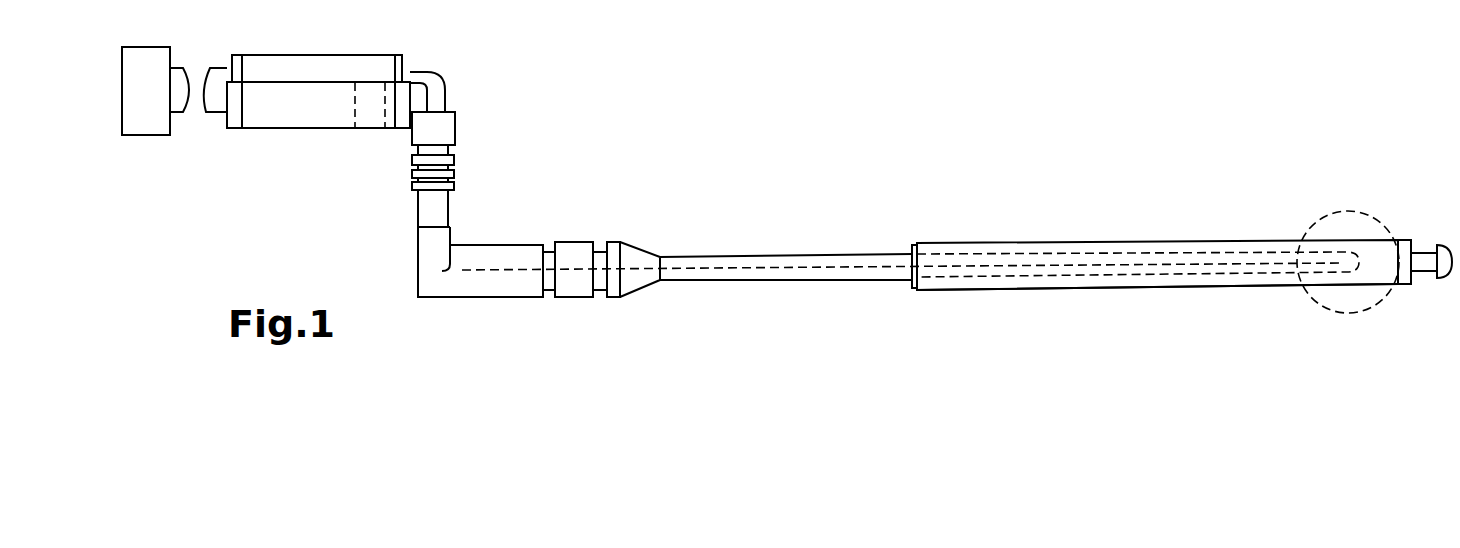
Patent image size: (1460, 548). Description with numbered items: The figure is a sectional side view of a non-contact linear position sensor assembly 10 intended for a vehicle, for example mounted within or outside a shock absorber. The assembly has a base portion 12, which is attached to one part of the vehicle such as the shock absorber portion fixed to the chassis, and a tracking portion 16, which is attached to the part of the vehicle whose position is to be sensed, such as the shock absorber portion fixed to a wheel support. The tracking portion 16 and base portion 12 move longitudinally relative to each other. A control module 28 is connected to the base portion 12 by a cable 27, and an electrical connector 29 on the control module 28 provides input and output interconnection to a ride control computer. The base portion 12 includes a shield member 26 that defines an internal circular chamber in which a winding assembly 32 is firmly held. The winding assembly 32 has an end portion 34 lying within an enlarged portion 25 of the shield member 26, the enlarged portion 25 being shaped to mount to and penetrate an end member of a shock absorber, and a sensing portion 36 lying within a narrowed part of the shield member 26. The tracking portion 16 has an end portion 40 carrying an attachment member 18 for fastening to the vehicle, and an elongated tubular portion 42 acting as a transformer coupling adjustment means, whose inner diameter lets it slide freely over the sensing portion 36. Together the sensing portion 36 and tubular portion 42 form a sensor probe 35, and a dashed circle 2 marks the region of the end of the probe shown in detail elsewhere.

The non-contact linear position sensor assembly 10 is at (780, 137).
The base portion 12 is at (500, 306).
The tracking portion 16 is at (1239, 226).
The attachment member 18 is at (1448, 245).
The detail circle 2 is at (1342, 212).
The enlarged portion 25 is at (590, 242).
The shield member 26 is at (643, 285).
The cable 27 is at (433, 74).
The control module 28 is at (313, 128).
The electrical connector 29 is at (140, 135).
The winding assembly 32 is at (823, 267).
The end portion 34 is at (505, 270).
The sensor probe 35 is at (1084, 229).
The sensing portion 36 is at (885, 267).
The end portion 40 is at (1402, 287).
The elongated tubular portion 42 is at (1097, 290).